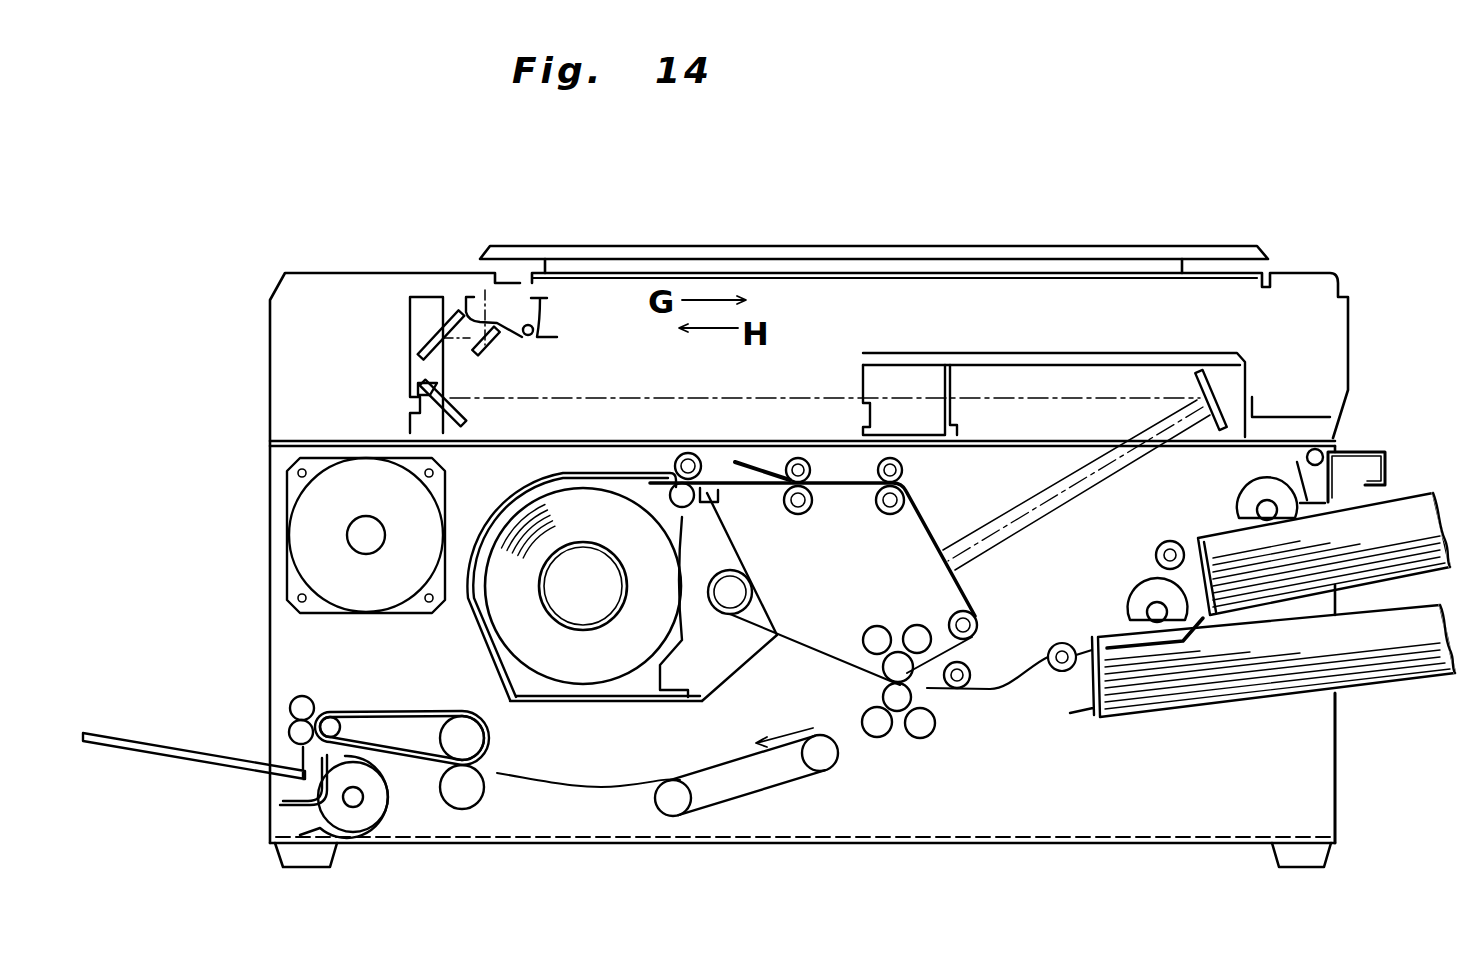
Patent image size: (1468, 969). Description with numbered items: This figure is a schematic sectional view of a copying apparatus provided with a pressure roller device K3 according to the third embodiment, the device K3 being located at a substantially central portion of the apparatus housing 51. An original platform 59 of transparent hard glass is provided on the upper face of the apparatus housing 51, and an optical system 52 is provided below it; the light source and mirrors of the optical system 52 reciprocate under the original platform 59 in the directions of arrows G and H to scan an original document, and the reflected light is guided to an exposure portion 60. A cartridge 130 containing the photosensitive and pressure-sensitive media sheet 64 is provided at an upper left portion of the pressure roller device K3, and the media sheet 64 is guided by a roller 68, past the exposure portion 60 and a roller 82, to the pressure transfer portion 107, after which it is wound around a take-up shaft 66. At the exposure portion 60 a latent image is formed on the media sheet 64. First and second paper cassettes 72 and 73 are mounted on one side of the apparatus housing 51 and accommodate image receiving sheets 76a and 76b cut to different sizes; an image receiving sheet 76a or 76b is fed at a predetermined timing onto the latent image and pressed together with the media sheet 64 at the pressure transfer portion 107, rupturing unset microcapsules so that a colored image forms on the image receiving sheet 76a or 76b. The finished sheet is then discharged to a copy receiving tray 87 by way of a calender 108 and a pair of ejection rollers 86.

The apparatus housing 51 is at (1305, 272).
The optical system 52 is at (845, 377).
The original platform 59 is at (806, 279).
The exposure portion 60 is at (948, 551).
The media sheet 64 is at (565, 657).
The take-up shaft 66 is at (748, 580).
The roller 68 is at (790, 461).
The first paper cassette 72 is at (1408, 490).
The second paper cassette 73 is at (1405, 690).
The image receiving sheet 76a is at (1388, 580).
The image receiving sheet 76b is at (1398, 683).
The roller 82 is at (956, 617).
The ejection rollers 86 is at (291, 700).
The copy receiving tray 87 is at (165, 758).
The pressure transfer portion 107 is at (882, 690).
The calender 108 is at (400, 710).
The cartridge 130 is at (613, 698).
The pressure roller device K3 is at (911, 748).